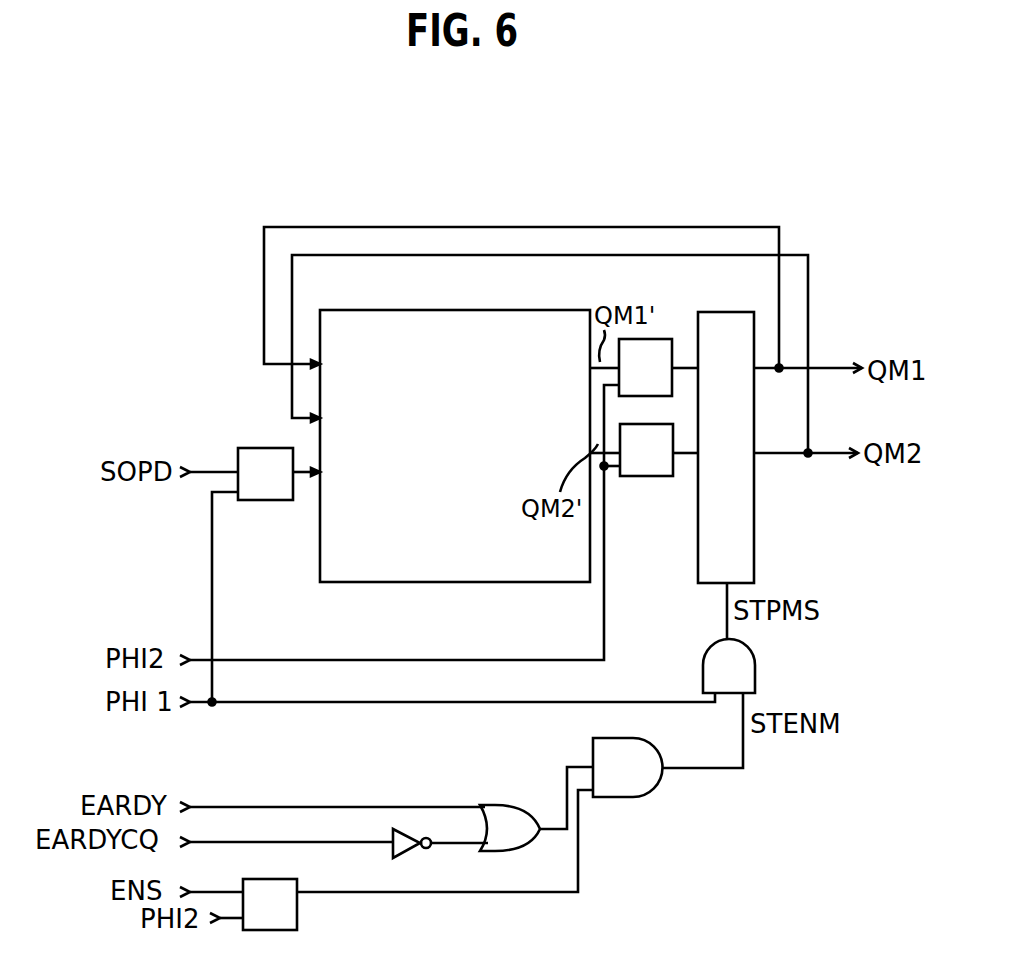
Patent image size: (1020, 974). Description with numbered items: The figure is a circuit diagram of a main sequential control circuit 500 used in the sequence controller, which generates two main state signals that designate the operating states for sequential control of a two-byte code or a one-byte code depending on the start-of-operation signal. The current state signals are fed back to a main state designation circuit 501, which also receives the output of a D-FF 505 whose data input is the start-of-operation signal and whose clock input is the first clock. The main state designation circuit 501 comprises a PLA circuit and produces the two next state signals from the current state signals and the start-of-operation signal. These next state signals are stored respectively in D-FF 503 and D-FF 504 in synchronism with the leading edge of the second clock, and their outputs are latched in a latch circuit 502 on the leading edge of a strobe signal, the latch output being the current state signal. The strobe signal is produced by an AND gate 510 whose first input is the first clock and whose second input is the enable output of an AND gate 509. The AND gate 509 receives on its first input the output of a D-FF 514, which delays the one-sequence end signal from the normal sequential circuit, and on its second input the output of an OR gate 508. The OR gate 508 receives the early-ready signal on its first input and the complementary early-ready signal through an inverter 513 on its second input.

The main sequential control circuit 500 is at (495, 183).
The main state designation circuit 501 is at (518, 310).
The latch circuit 502 is at (738, 458).
The D-FF 503 is at (650, 339).
The D-FF 504 is at (650, 476).
The D-FF 505 is at (272, 500).
The OR gate 508 is at (525, 851).
The AND gate 509 is at (655, 790).
The AND gate 510 is at (755, 676).
The inverter 513 is at (410, 858).
The D-FF 514 is at (297, 920).